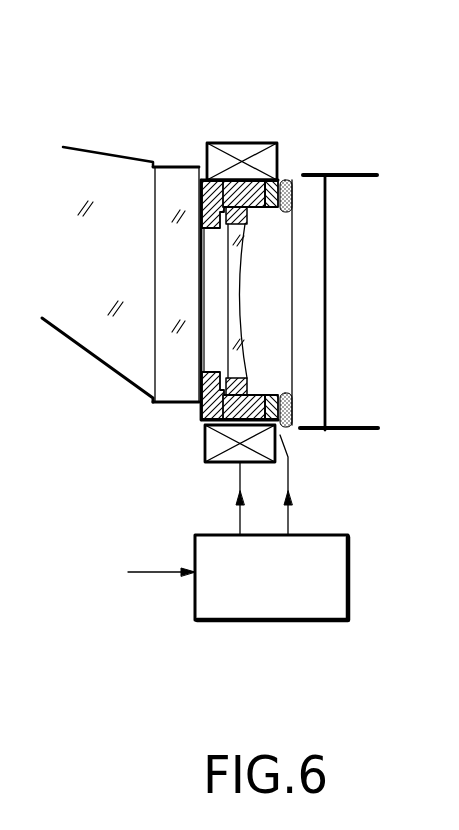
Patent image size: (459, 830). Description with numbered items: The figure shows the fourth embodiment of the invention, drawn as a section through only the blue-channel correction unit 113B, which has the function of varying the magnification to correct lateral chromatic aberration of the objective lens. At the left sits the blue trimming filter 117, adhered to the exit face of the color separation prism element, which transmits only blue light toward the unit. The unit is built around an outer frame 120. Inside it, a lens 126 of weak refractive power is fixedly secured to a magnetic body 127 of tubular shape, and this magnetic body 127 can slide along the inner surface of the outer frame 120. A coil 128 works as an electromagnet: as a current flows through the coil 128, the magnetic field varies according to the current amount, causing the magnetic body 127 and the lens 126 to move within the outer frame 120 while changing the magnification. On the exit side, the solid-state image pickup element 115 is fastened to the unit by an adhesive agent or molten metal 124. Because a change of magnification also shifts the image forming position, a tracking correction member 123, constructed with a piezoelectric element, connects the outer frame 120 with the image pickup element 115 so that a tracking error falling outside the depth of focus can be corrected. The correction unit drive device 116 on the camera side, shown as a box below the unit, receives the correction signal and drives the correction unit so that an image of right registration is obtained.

The correction unit 113B is at (306, 49).
The solid-state image pickup element 115 is at (327, 173).
The correction unit drive device 116 is at (348, 597).
The blue trimming filter 117 is at (167, 172).
The outer frame 120 is at (201, 195).
The tracking correction member 123 is at (281, 177).
The adhesive agent or molten metal 124 is at (312, 188).
The lens 126 is at (210, 180).
The magnetic body 127 is at (243, 186).
The coil 128 is at (265, 176).